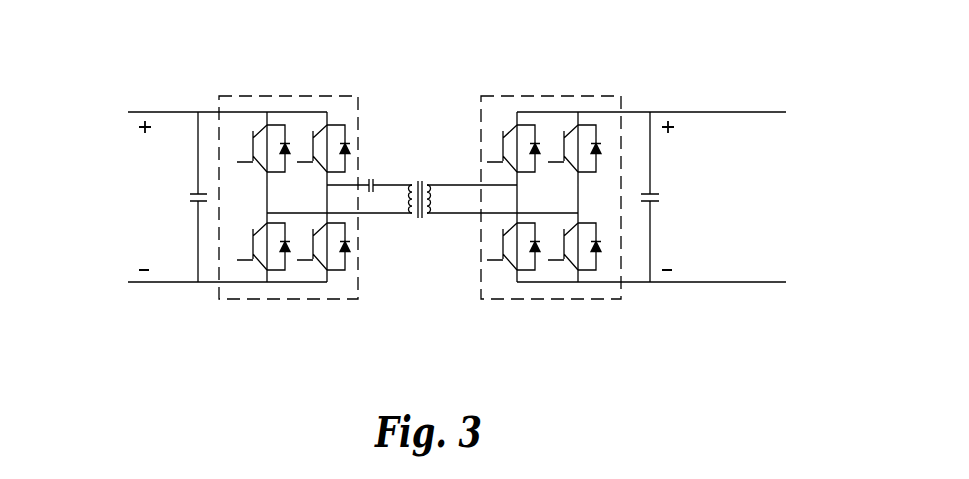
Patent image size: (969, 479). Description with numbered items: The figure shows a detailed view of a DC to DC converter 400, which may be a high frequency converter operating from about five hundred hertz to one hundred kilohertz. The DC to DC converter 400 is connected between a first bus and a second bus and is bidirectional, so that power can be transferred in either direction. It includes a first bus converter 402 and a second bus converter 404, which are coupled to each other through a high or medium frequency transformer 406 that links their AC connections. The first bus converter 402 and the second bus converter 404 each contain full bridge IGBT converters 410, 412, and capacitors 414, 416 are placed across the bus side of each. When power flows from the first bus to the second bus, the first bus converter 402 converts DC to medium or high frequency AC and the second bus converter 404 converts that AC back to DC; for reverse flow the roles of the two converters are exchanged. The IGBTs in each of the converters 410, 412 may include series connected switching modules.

The DC to DC converter 400 is at (184, 54).
The first bus converter 402 is at (281, 76).
The second bus converter 404 is at (558, 76).
The transformer 406 is at (422, 180).
The full bridge IGBT converter 410 is at (298, 299).
The full bridge IGBT converter 412 is at (560, 299).
The capacitor 414 is at (195, 192).
The capacitor 416 is at (655, 191).